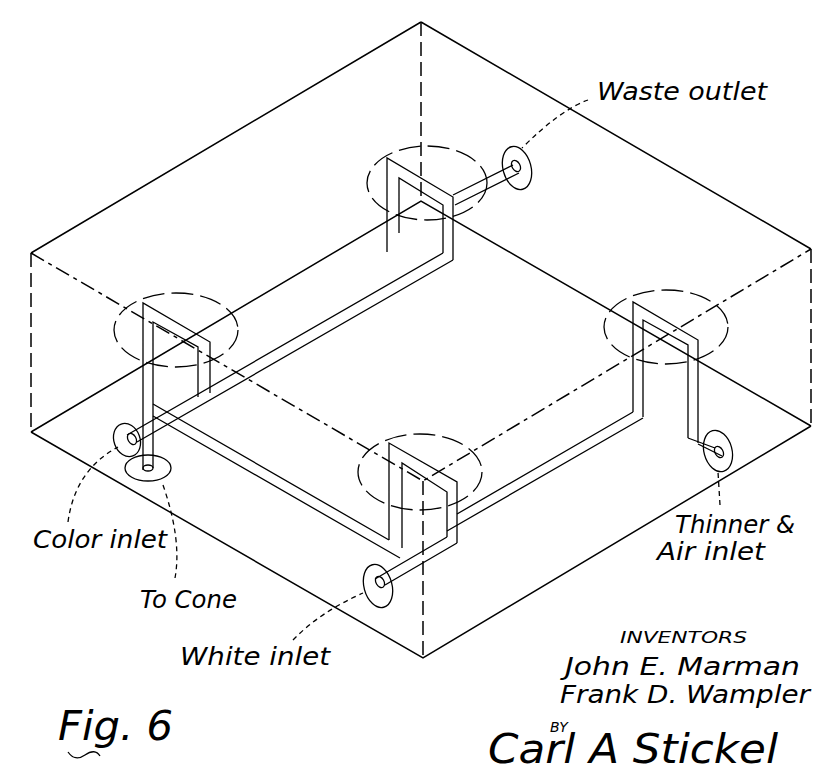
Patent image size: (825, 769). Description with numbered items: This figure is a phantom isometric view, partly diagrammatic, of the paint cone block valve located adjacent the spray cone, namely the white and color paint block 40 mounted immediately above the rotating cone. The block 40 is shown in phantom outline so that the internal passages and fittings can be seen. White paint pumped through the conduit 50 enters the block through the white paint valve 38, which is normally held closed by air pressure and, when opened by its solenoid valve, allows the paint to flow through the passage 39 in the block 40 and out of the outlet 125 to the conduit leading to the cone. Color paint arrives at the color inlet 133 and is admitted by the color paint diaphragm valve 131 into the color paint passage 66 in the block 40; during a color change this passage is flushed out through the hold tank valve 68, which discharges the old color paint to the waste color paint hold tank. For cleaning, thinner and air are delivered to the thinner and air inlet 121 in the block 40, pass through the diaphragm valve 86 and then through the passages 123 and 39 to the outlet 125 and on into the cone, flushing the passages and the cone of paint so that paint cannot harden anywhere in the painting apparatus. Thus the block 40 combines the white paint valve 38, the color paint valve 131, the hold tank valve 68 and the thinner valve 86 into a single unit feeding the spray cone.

The white and color paint block 40 is at (275, 106).
The color paint diaphragm valve 131 is at (165, 296).
The hold tank valve 68 is at (362, 178).
The white paint valve 38 is at (452, 432).
The diaphragm valve 86 is at (650, 292).
The color paint passage 66 is at (392, 302).
The passage 39 is at (313, 513).
The passage 123 is at (546, 480).
The color inlet 133 is at (112, 445).
The outlet 125 is at (143, 487).
The conduit 50 is at (386, 608).
The thinner and air inlet 121 is at (740, 457).